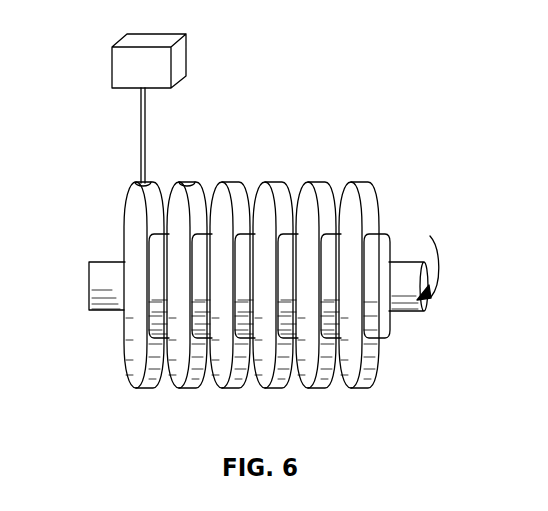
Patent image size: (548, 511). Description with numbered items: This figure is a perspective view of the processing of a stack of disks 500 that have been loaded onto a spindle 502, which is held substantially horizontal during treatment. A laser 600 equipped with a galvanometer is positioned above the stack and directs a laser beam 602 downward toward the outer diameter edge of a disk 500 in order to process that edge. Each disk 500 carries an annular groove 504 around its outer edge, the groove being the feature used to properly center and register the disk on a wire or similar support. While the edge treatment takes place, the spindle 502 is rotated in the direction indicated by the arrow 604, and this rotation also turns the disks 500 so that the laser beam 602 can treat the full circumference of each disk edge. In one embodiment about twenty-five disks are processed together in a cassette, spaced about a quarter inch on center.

The disk 500 is at (360, 389).
The spindle 502 is at (90, 278).
The annular groove 504 is at (188, 182).
The laser 600 is at (112, 67).
The laser beam 602 is at (140, 127).
The arrow 604 is at (430, 236).